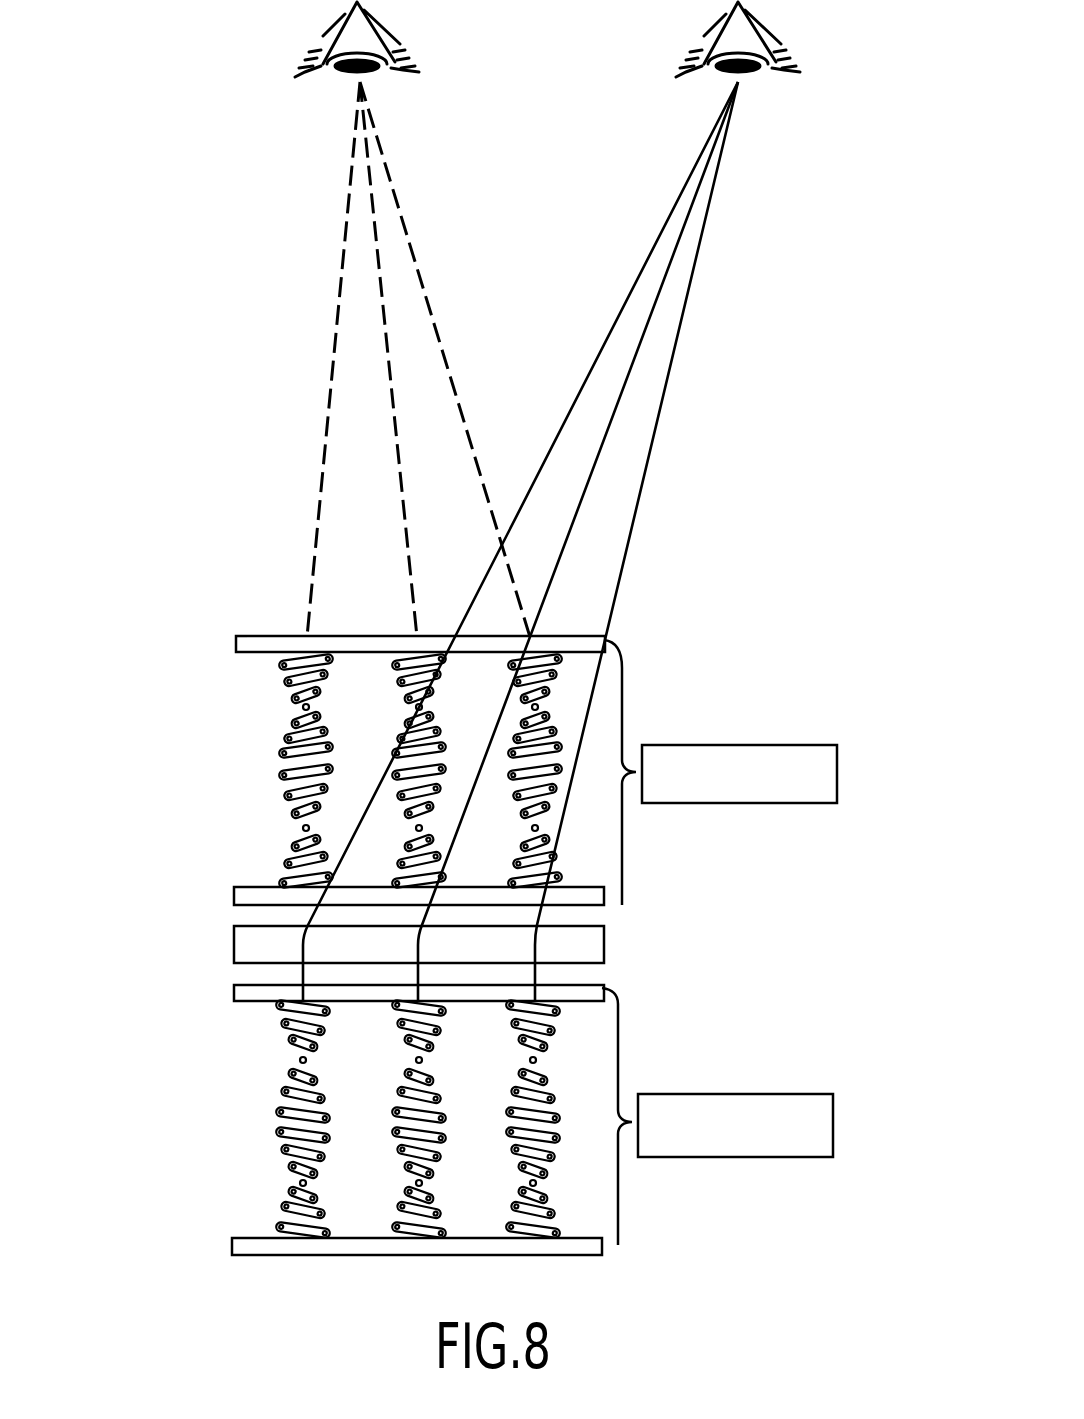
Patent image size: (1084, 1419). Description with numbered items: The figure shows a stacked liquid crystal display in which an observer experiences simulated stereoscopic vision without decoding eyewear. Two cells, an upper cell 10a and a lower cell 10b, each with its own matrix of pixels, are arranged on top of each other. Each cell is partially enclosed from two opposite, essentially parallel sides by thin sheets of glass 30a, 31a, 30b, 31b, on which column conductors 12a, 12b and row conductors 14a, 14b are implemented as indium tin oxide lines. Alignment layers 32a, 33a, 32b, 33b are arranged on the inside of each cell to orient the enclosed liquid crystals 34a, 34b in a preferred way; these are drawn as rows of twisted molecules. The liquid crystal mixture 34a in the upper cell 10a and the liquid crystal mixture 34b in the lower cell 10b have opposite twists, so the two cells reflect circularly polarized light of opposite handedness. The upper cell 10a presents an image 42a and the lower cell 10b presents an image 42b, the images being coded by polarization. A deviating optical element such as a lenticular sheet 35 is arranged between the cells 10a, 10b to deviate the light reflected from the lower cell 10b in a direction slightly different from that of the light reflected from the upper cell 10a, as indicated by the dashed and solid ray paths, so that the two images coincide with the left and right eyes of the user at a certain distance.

The image 42a is at (247, 635).
The image 42b is at (248, 988).
The thin sheet of glass 30a is at (514, 628).
The column conductors 12a is at (606, 641).
The alignment layer 32a is at (600, 653).
The liquid crystal mixture 34a is at (535, 753).
The upper cell 10a is at (752, 772).
The alignment layer 33a is at (582, 888).
The thin sheet of glass 31a is at (515, 887).
The row conductors 14a is at (603, 906).
The lenticular sheet 35 is at (604, 943).
The thin sheet of glass 30b is at (516, 1015).
The column conductors 12b is at (602, 992).
The alignment layer 32b is at (590, 1003).
The liquid crystal mixture 34b is at (532, 1062).
The lower cell 10b is at (753, 1116).
The alignment layer 33b is at (585, 1239).
The thin sheet of glass 31b is at (511, 1262).
The row conductors 14b is at (604, 1252).